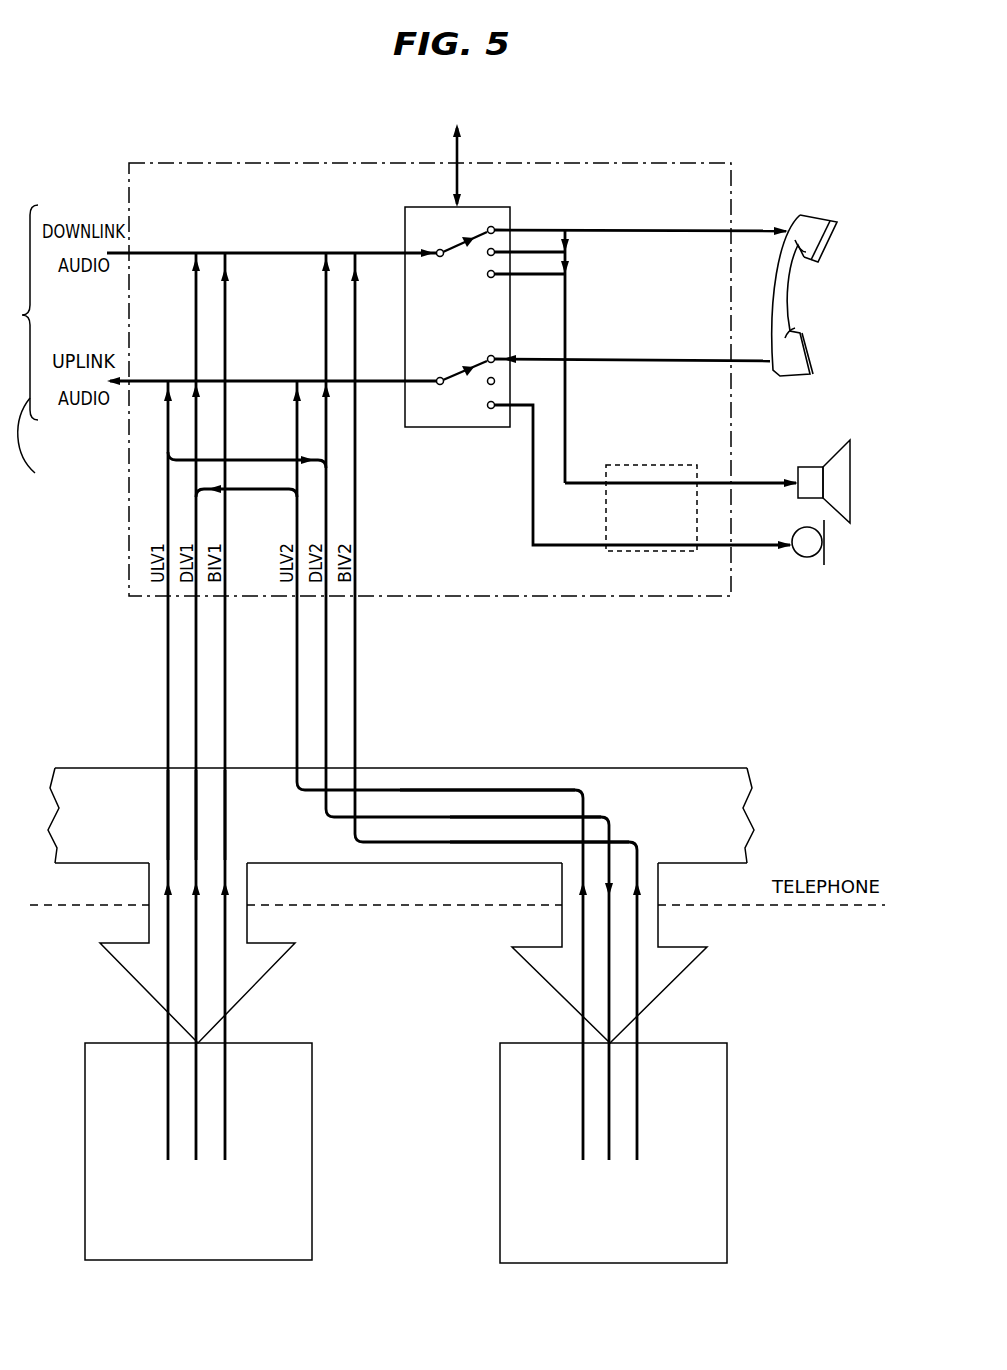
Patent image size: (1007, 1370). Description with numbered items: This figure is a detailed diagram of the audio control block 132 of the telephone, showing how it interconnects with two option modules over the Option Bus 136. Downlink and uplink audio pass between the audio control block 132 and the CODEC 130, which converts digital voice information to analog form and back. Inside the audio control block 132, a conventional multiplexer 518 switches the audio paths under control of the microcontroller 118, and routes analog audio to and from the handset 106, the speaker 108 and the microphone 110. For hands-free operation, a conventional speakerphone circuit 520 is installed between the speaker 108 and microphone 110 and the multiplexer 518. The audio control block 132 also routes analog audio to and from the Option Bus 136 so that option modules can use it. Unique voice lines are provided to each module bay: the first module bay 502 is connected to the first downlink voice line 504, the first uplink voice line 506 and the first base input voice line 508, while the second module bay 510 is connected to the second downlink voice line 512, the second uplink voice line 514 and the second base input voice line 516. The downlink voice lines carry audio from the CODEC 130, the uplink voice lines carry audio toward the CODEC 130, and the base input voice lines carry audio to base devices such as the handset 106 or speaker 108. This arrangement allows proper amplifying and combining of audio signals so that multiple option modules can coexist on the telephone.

The audio control block 132 is at (690, 163).
The microcontroller 118 is at (451, 154).
The coder/decoder (CODEC) 130 is at (55, 466).
The multiplexer 518 is at (510, 210).
The speakerphone circuit 520 is at (652, 465).
The handset 106 is at (815, 216).
The speaker 108 is at (851, 447).
The microphone 110 is at (826, 553).
The Option Bus 136 is at (742, 768).
The ULV2 line 514 is at (573, 790).
The DLV2 line 512 is at (612, 826).
The BIV2 line 516 is at (640, 855).
The ULV1 line 506 is at (168, 800).
The DLV1 line 504 is at (197, 830).
The BIV1 line 508 is at (226, 852).
The module bay 1 502 is at (308, 1043).
The module bay 2 510 is at (713, 1043).